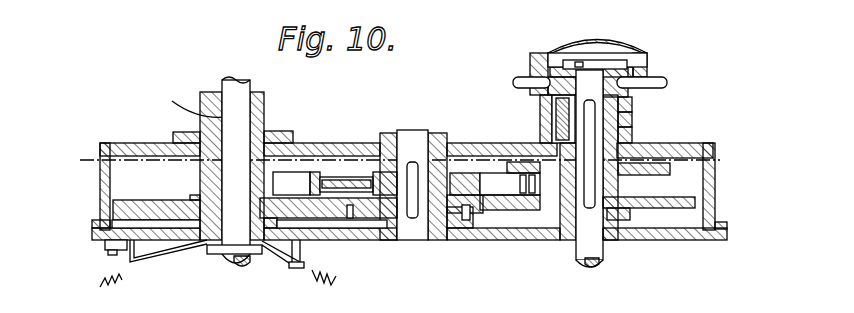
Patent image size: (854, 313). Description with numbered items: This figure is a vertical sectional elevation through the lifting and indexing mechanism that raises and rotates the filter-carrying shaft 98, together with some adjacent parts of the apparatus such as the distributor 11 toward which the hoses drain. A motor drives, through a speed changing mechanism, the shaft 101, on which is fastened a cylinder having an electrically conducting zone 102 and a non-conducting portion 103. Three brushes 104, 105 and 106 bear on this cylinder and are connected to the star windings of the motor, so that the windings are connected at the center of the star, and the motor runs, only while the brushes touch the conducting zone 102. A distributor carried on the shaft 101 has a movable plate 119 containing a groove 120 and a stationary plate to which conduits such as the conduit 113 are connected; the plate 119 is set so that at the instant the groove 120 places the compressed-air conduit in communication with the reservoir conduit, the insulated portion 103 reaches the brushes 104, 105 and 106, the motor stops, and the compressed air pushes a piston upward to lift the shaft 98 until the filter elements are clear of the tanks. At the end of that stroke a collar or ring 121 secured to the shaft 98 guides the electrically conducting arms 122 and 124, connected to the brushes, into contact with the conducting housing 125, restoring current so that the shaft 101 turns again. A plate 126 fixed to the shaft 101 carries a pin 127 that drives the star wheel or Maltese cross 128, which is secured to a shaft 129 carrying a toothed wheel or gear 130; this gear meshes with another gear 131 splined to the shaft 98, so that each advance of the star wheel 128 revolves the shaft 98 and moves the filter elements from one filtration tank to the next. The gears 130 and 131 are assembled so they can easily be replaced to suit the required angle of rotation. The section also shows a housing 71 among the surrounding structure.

The distributor 11 is at (82, 161).
The housing section 71 is at (716, 162).
The shaft 98 is at (230, 92).
The shaft 101 is at (592, 238).
The electrically conducting zone 102 is at (603, 123).
The non-conducting portion 103 is at (556, 125).
The brush 104 is at (682, 130).
The brush 105 is at (667, 118).
The brush 106 is at (681, 97).
The conduit 113 is at (517, 82).
The movable plate 119 is at (647, 58).
The groove 120 is at (647, 77).
The collar or ring 121 is at (213, 255).
The electrically conducting arm 122 is at (145, 264).
The electrically conducting arm 124 is at (293, 260).
The housing 125 is at (352, 233).
The plate 126 is at (670, 172).
The pin 127 is at (520, 218).
The star wheel 128 is at (340, 185).
The shaft 129 is at (413, 137).
The toothed wheel or gear 130 is at (459, 213).
The toothed wheel or gear 131 is at (128, 208).